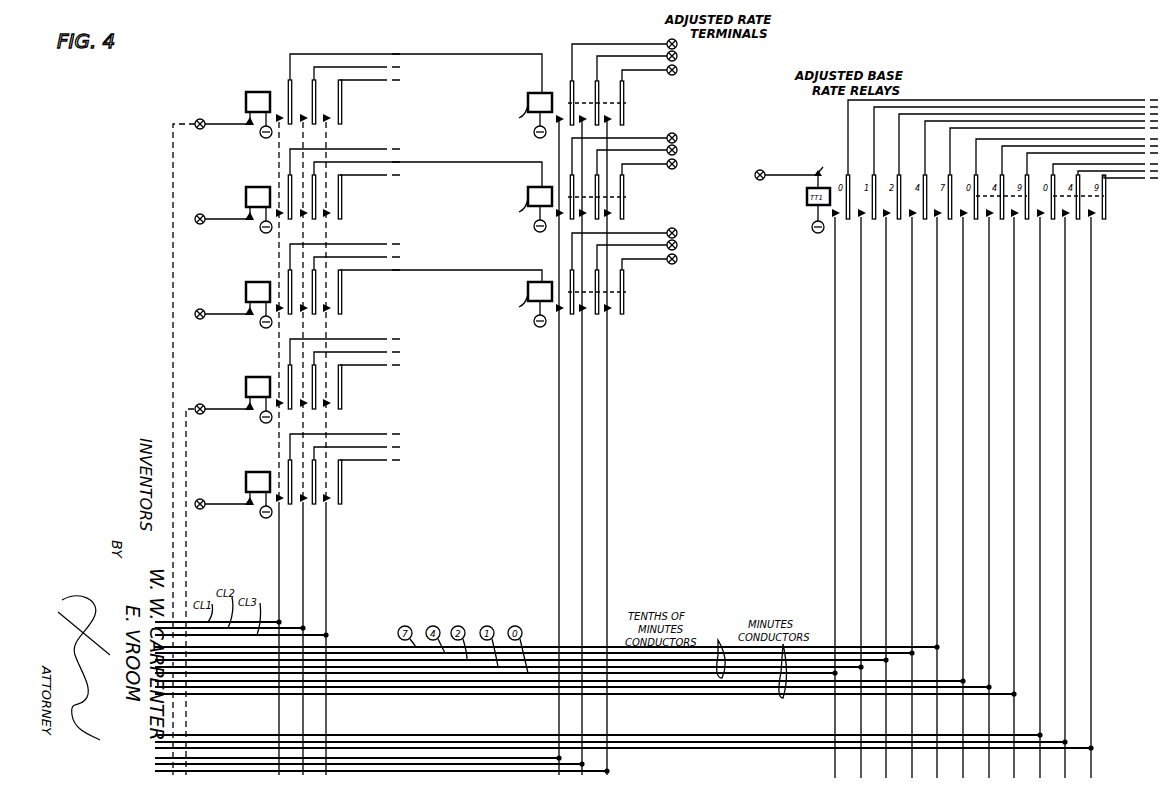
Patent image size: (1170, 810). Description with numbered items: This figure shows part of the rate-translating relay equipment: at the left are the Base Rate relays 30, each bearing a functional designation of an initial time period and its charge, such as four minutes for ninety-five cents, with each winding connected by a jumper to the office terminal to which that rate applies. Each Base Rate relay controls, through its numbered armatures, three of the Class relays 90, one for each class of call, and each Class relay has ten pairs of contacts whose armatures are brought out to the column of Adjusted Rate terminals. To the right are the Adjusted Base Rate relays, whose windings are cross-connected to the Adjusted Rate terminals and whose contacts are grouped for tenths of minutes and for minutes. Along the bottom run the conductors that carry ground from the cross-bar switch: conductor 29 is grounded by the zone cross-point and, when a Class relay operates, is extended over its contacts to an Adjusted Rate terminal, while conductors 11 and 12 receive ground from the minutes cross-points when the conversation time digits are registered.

The Base Rate relays 30 is at (286, 394).
The Class relays 90 is at (569, 395).
The conductor 12 is at (483, 686).
The conductor 11 is at (654, 738).
The conductor 29 is at (395, 771).